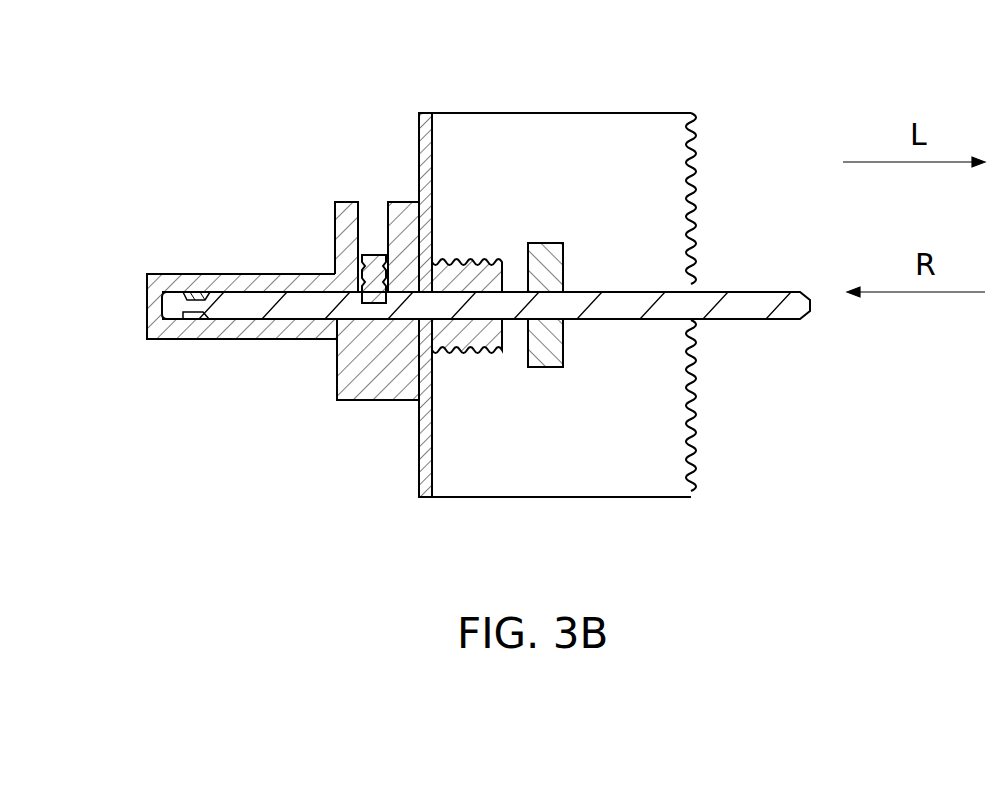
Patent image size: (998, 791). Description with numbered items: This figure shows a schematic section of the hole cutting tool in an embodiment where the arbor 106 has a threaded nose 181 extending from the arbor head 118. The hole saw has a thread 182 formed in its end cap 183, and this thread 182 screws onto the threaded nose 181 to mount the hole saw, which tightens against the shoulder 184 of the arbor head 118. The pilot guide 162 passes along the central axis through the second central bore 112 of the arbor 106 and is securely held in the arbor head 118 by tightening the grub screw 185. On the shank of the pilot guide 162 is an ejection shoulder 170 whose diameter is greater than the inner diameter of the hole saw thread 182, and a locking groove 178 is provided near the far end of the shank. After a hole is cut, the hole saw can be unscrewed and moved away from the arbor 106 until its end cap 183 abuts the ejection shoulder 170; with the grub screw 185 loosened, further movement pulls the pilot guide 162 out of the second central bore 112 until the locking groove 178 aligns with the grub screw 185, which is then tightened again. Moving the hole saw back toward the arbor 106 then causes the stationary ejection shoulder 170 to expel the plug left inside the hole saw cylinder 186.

The arbor 106 is at (298, 340).
The second central bore 112 is at (180, 274).
The arbor head 118 is at (323, 403).
The pilot guide 162 is at (650, 303).
The ejection shoulder 170 is at (563, 257).
The locking groove 178 is at (228, 274).
The threaded nose 181 is at (480, 352).
The thread 182 is at (432, 262).
The end cap 183 is at (420, 170).
The shoulder 184 is at (417, 427).
The grub screw 185 is at (333, 203).
The hole saw cylinder 186 is at (638, 413).